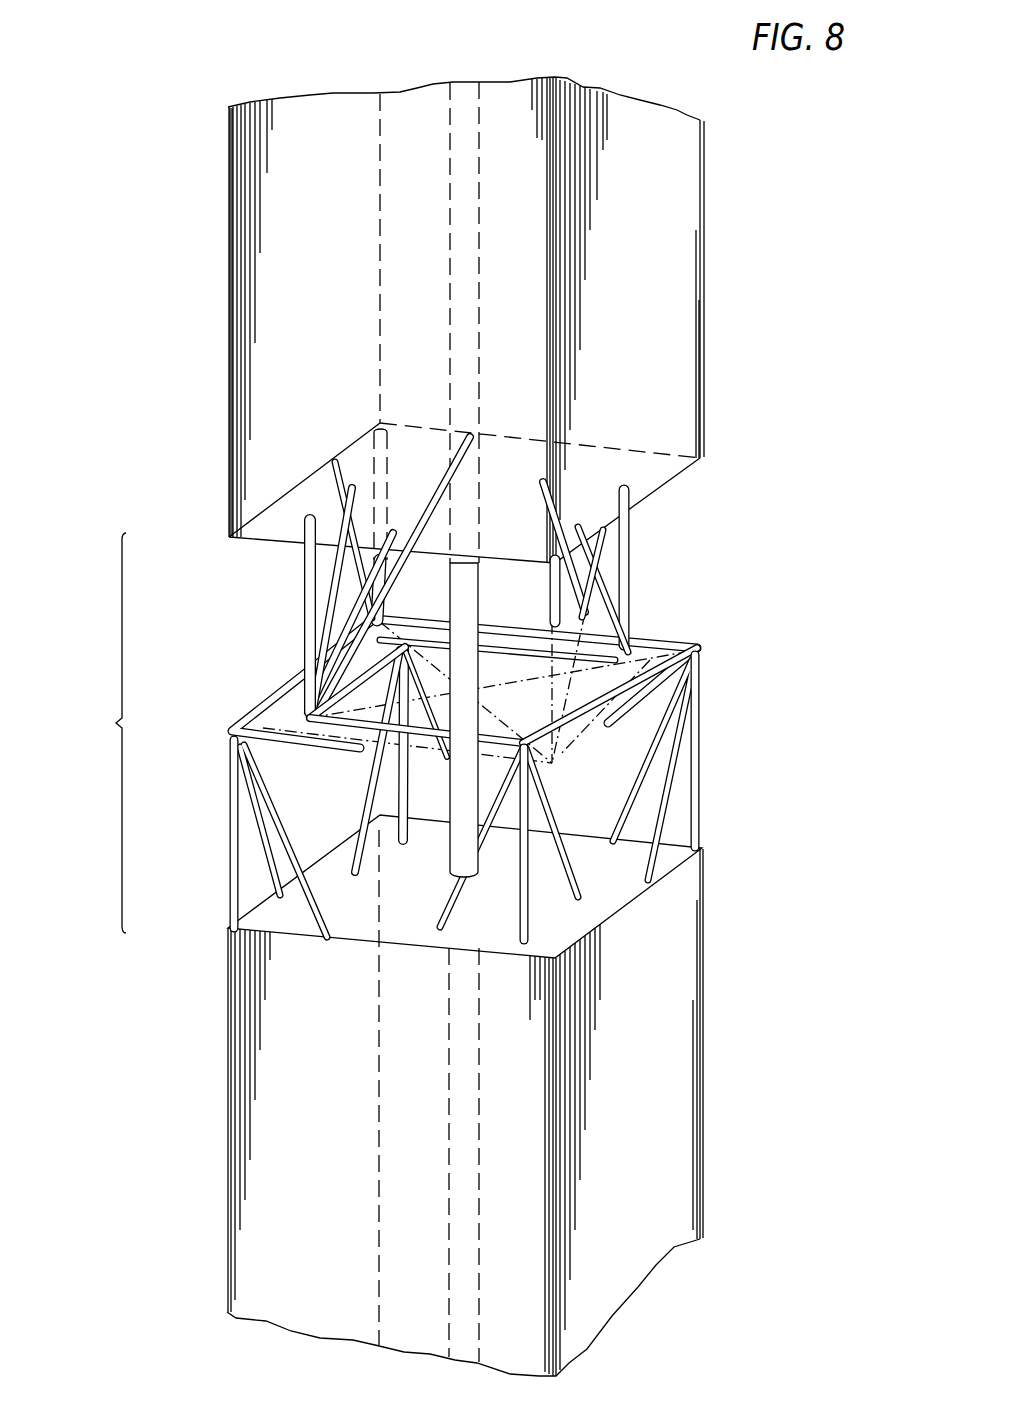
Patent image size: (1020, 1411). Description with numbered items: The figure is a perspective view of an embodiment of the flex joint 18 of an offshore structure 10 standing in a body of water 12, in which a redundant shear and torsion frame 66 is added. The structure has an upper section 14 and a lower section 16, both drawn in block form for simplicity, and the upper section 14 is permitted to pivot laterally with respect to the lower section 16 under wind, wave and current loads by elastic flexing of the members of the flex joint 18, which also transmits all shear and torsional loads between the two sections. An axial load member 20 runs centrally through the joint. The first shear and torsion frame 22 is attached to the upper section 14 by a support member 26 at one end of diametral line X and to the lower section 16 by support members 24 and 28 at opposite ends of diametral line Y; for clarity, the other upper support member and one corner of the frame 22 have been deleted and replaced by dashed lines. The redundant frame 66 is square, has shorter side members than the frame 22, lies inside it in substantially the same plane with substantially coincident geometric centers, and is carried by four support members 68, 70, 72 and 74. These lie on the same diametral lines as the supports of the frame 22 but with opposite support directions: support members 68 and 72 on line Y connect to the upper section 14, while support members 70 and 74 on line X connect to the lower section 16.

The offshore structure 10 is at (173, 353).
The body of water 12 is at (805, 402).
The upper section 14 is at (703, 281).
The lower section 16 is at (703, 1115).
The flex joint 18 is at (104, 733).
The axial load member 20 is at (448, 862).
The shear and torsion frame 22 is at (684, 637).
The support member 24 is at (223, 772).
The support member 26 is at (355, 583).
The support member 28 is at (706, 683).
The redundant shear and torsion frame 66 is at (577, 717).
The support member 68 is at (300, 708).
The support member 70 is at (387, 678).
The support member 72 is at (637, 619).
The support member 74 is at (548, 777).
The diametral line X is at (515, 692).
The diametral line Y is at (270, 727).